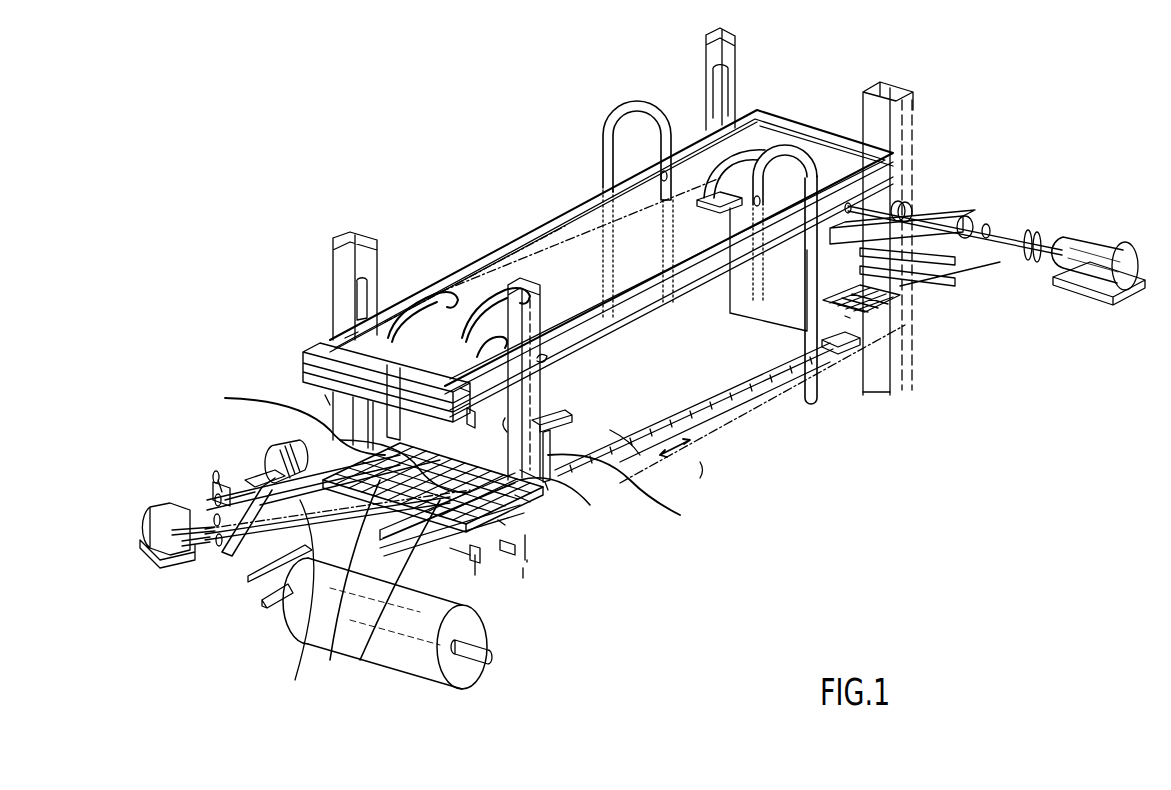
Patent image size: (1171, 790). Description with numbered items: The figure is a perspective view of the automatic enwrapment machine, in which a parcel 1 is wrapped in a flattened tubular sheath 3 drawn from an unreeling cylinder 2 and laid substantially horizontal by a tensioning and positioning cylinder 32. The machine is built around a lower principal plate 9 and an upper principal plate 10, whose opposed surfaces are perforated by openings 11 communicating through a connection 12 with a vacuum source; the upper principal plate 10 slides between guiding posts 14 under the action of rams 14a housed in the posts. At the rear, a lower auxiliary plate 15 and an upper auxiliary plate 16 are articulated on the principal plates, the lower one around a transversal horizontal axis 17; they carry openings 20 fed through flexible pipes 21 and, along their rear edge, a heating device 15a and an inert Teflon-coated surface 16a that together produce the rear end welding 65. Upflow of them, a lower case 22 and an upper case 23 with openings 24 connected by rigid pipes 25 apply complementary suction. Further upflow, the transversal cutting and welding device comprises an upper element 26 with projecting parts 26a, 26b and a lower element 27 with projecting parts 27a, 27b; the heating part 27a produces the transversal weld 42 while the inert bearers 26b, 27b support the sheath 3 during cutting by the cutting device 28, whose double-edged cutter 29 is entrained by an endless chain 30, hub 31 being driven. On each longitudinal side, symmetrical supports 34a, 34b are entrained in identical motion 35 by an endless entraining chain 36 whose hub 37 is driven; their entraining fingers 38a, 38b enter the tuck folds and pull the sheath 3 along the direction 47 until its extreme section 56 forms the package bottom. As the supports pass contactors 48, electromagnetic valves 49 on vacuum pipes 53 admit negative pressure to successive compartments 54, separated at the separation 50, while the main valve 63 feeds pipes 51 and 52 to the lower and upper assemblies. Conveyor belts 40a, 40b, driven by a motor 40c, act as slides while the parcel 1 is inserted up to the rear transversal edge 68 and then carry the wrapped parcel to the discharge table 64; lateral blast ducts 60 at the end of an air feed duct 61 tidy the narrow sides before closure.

The parcel 1 is at (575, 245).
The unreeling cylinder 2 is at (300, 618).
The flattened tubular sheath 3 is at (263, 603).
The lower principal plate 9 is at (738, 383).
The upper principal plate 10 is at (663, 303).
The openings 11 is at (856, 300).
The vacuum connection 12 is at (700, 418).
The guiding posts 14 is at (900, 370).
The rams 14a is at (727, 95).
The lower auxiliary plate 15 is at (545, 490).
The heating device 15a is at (320, 610).
The upper auxiliary plate 16 is at (520, 400).
The inert Teflon-coated surface 16a is at (472, 424).
The transversal horizontal axis 17 is at (540, 480).
The openings 20 is at (535, 500).
The flexible pipes 21 is at (442, 296).
The lower case 22 is at (340, 540).
The upper case 23 is at (350, 343).
The openings 24 is at (330, 490).
The rigid pipes 25 is at (445, 290).
The upper element of welding device 26 is at (308, 352).
The upper upflow projecting part 26a is at (318, 387).
The upper downflow projecting part 26b is at (467, 392).
The lower element of welding device 27 is at (505, 555).
The lower upflow projecting part 27a is at (258, 475).
The lower downflow projecting part 27b is at (272, 452).
The cutting device 28 is at (505, 530).
The double-edged cutter 29 is at (522, 506).
The endless chain 30 is at (212, 490).
The driven hub 31 is at (212, 504).
The tensioning and positioning cylinder 32 is at (330, 640).
The support 34a is at (470, 560).
The support 34b is at (220, 560).
The identical motion 35 is at (678, 449).
The endless entraining chain 36 is at (700, 476).
The driven hub 37 is at (210, 545).
The entraining finger 38a is at (395, 640).
The entraining finger 38b is at (265, 535).
The conveyor belt 40a is at (968, 222).
The conveyor belt 40b is at (905, 208).
The motor 40c is at (1110, 245).
The transversal weld 42 is at (850, 270).
The direction of sheath displacement 47 is at (250, 588).
The contactors 48 is at (880, 370).
The electromagnetic valves 49 is at (720, 215).
The compartment separation 50 is at (838, 188).
The vacuum pipe 51 is at (770, 370).
The vacuum pipe 52 is at (655, 118).
The vacuum pipes 53 is at (760, 148).
The compartments 54 is at (845, 188).
The extreme section 56 is at (842, 238).
The lateral blast ducts 60 is at (560, 428).
The air feed duct 61 is at (232, 396).
The main valve 63 is at (650, 470).
The discharge table 64 is at (950, 264).
The rear end welding 65 is at (505, 432).
The rear transversal edge 68 is at (552, 360).